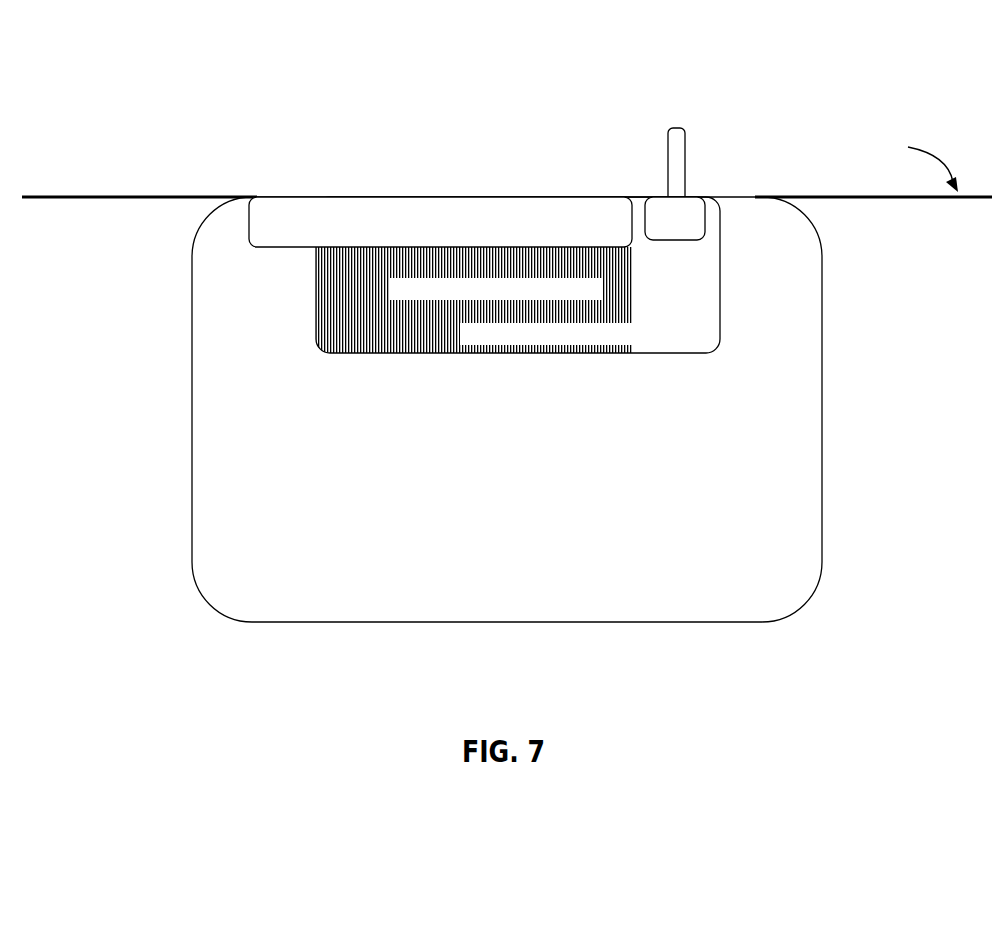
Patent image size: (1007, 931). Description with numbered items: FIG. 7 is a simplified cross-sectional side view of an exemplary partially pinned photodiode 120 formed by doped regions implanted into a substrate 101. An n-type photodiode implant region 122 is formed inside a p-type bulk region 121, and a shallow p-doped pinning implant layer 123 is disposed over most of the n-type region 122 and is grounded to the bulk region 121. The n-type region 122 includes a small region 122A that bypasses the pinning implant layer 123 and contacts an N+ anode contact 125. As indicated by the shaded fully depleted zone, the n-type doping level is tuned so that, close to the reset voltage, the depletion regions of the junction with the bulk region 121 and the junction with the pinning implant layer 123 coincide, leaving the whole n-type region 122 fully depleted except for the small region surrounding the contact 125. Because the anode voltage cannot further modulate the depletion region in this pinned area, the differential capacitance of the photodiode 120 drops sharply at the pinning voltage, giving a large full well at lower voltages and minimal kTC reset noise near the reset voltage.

The photodiode 120 is at (163, 77).
The substrate 101 is at (803, 666).
The p-type bulk region 121 is at (732, 536).
The n-type photodiode implant region 122 is at (703, 343).
The small region 122A is at (705, 271).
The pinning implant layer 123 is at (580, 233).
The N+ anode contact 125 is at (693, 236).